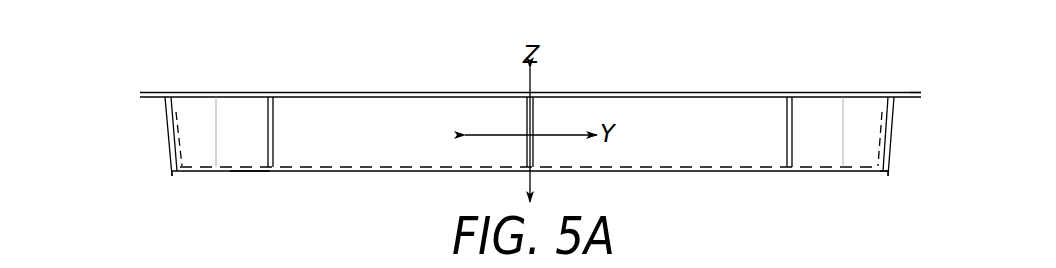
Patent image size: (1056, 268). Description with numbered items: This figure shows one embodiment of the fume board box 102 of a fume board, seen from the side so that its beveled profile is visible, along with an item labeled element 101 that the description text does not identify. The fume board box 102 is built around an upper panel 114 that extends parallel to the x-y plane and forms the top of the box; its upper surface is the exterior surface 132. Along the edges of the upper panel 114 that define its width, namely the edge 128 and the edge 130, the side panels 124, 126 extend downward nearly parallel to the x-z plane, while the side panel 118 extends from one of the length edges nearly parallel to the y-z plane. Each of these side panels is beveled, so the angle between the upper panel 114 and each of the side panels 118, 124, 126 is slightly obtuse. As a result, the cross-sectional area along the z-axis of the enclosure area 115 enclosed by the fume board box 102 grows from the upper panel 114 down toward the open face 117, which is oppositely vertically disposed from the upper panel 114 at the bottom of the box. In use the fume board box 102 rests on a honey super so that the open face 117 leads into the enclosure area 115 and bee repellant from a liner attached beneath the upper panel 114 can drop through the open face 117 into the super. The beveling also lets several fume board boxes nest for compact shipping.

The vehicle 101 is at (893, 258).
The fume board box 102 is at (940, 80).
The upper panel 114 is at (822, 172).
The enclosure area 115 is at (381, 145).
The open face 117 is at (213, 85).
The side panel 118 is at (656, 133).
The side panel 124 is at (170, 131).
The side panel 126 is at (893, 128).
The edge 128 is at (174, 173).
The edge 130 is at (885, 173).
The exterior surface 132 is at (250, 173).